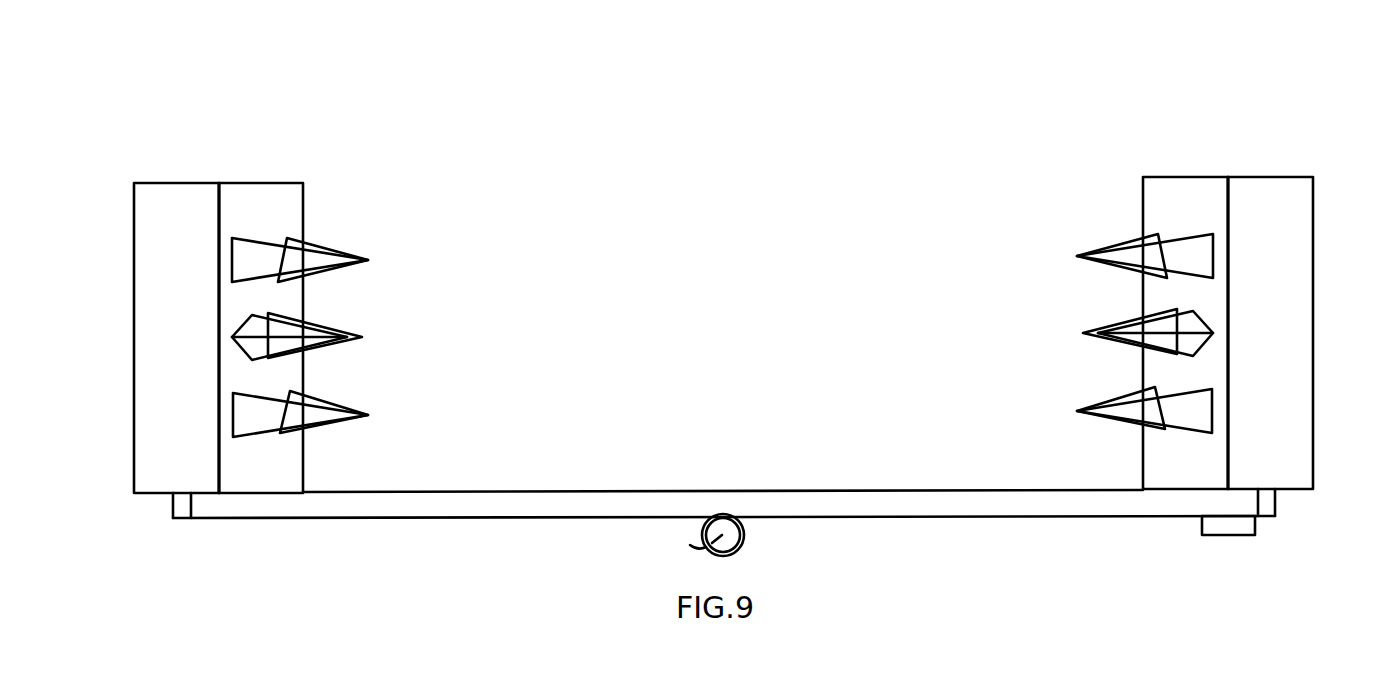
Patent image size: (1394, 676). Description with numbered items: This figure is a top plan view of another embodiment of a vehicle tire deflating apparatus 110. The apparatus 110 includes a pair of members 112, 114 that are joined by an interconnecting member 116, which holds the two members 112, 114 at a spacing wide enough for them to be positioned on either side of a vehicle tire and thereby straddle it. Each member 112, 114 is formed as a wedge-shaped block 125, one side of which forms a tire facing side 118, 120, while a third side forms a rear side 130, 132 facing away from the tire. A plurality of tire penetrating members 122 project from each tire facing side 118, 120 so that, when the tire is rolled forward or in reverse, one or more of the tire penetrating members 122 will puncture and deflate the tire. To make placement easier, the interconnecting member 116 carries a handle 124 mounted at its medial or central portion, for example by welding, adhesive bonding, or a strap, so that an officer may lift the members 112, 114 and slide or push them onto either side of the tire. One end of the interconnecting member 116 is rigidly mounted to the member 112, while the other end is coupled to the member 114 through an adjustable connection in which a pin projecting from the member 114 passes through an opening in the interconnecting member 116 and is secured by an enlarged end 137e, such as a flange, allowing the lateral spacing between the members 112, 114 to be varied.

The tire deflating apparatus 110 is at (912, 80).
The member 112 is at (268, 157).
The member 114 is at (1287, 128).
The interconnecting member 116 is at (725, 500).
The tire facing side 118 is at (272, 207).
The tire facing side 120 is at (1183, 207).
The tire penetrating members 122 is at (312, 415).
The handle 124 is at (747, 533).
The wedge-shaped block 125 is at (190, 198).
The rear side 130 is at (168, 362).
The rear side 132 is at (1282, 298).
The enlarged end 137e is at (1248, 532).